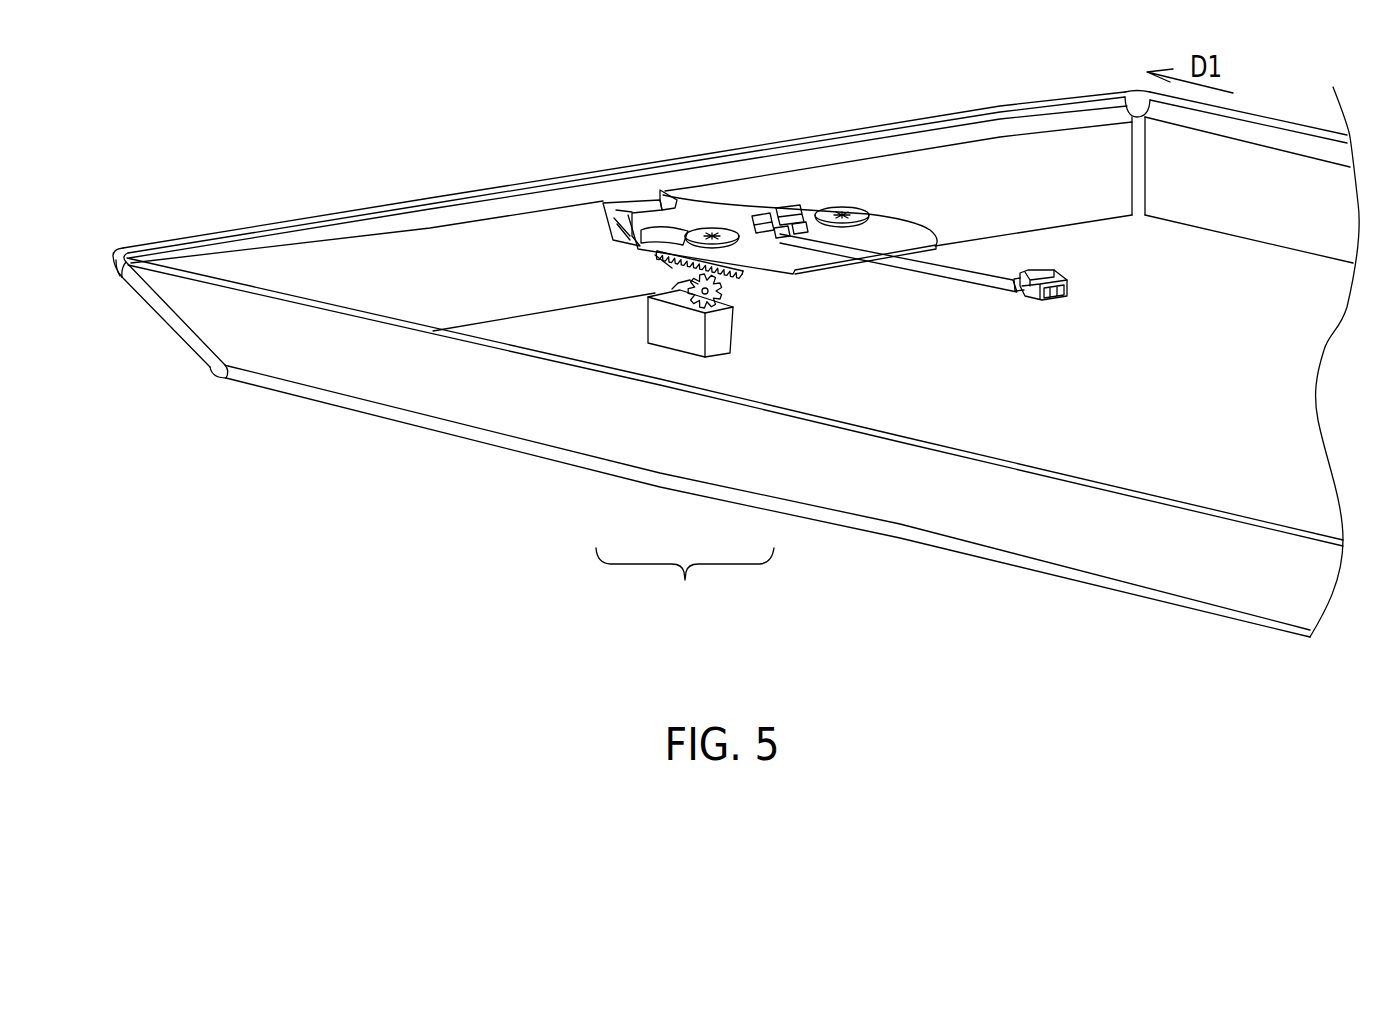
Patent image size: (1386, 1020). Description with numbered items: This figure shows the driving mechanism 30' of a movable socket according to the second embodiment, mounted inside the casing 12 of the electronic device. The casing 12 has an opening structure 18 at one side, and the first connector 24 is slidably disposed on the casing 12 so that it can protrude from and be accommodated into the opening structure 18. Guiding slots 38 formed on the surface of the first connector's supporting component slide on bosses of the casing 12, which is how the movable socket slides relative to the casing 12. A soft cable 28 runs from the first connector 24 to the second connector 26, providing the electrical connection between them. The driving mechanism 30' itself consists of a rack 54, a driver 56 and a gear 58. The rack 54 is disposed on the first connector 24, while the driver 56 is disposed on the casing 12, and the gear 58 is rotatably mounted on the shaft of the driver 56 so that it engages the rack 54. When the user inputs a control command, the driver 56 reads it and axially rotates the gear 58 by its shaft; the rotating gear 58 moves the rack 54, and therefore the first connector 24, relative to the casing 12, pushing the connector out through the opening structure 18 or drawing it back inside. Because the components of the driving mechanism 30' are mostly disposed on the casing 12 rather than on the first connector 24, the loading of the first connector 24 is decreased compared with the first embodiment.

The casing 12 is at (972, 397).
The first connector 24 is at (889, 237).
The soft cable 28 is at (968, 277).
The second connector 26 is at (1043, 274).
The guiding slot 38 is at (643, 238).
The opening structure 18 is at (673, 267).
The rack 54 is at (743, 275).
The gear 58 is at (697, 303).
The driver 56 is at (661, 329).
The driving mechanism 30' is at (685, 450).